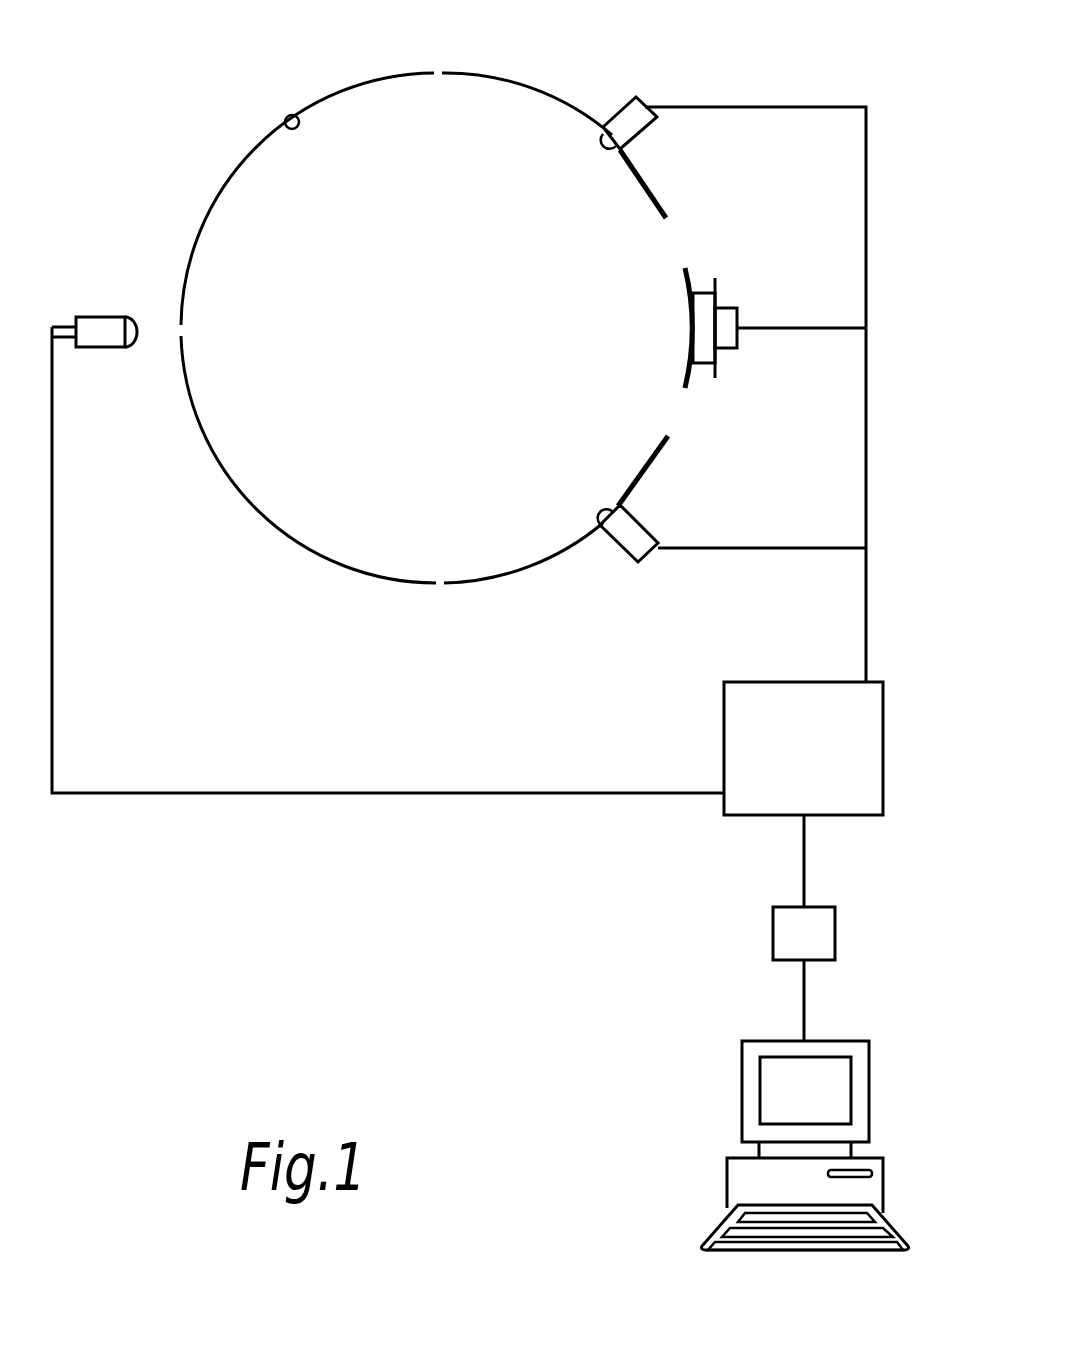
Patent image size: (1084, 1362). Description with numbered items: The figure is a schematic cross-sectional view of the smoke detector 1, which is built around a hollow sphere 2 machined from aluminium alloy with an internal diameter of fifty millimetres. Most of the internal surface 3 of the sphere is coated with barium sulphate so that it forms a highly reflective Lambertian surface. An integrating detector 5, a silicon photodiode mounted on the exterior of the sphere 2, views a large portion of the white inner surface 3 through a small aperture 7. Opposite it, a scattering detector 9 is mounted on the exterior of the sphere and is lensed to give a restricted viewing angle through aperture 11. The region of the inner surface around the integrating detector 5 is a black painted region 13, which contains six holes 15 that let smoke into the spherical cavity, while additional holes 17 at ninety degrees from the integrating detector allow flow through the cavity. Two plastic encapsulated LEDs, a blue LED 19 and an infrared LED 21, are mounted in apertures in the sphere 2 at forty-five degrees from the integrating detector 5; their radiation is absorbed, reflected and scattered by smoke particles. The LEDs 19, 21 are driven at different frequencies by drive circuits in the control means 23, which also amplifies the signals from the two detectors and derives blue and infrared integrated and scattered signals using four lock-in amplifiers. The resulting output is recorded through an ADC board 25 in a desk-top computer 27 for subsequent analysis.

The smoke detector 1 is at (473, 356).
The hollow sphere 2 is at (535, 90).
The internal surface 3 is at (290, 122).
The integrating detector 5 is at (705, 348).
The aperture 7 is at (688, 330).
The scattering detector 9 is at (103, 317).
The aperture 11 is at (183, 331).
The black painted region 13 is at (688, 283).
The holes 15 is at (676, 242).
The additional holes 17 is at (440, 70).
The blue LED 19 is at (624, 112).
The infrared LED 21 is at (620, 523).
The control means 23 is at (750, 795).
The ADC board 25 is at (790, 940).
The desk-top computer 27 is at (883, 1197).